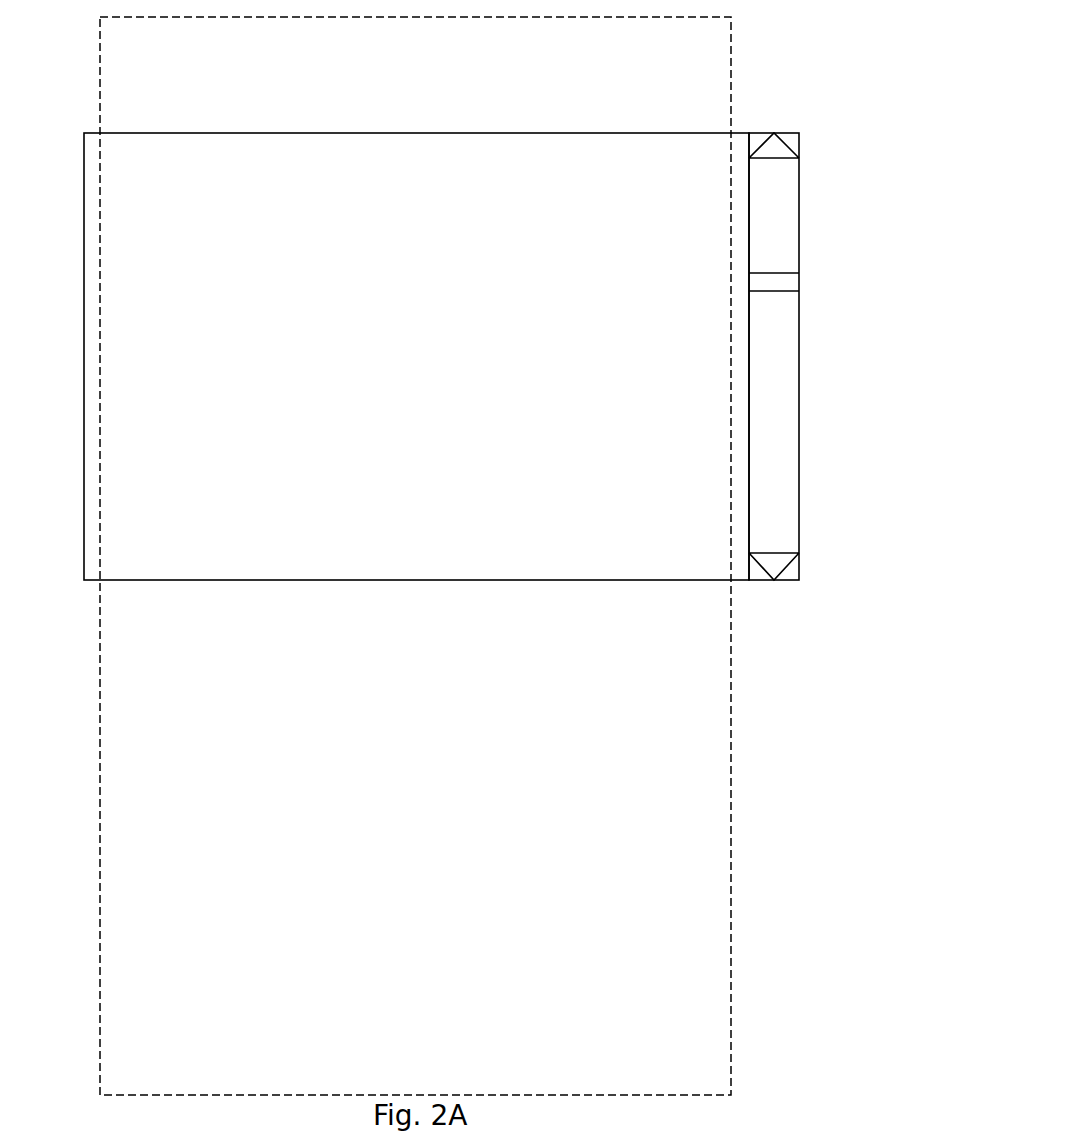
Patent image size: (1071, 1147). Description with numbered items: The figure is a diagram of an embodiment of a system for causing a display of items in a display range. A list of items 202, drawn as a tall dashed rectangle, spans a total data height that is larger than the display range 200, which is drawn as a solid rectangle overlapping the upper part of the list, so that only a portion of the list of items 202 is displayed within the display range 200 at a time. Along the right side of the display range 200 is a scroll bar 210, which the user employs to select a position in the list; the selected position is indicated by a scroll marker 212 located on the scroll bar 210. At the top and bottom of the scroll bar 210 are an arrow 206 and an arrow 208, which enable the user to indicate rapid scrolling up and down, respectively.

The display range 200 is at (94, 132).
The list of items 202 is at (732, 45).
The arrow 206 is at (785, 146).
The arrow 208 is at (787, 565).
The scroll bar 210 is at (800, 392).
The scroll marker 212 is at (790, 285).